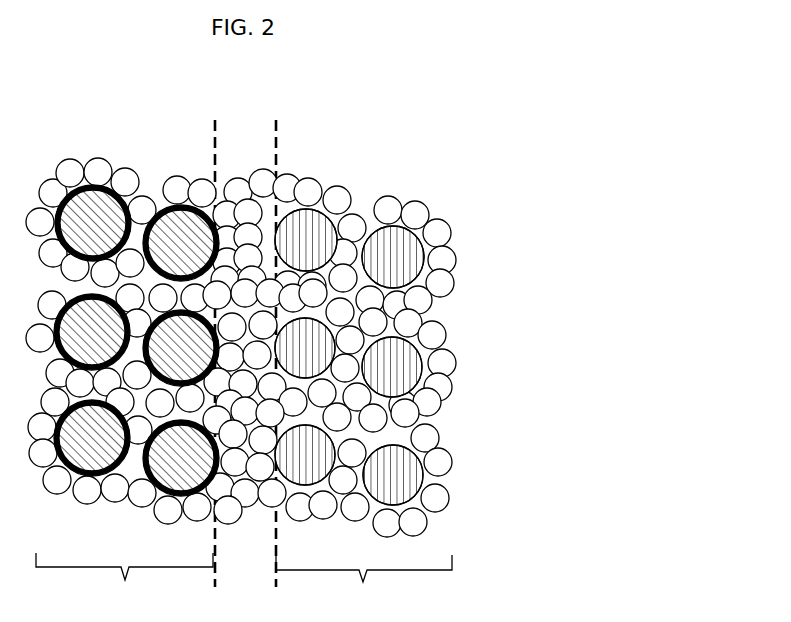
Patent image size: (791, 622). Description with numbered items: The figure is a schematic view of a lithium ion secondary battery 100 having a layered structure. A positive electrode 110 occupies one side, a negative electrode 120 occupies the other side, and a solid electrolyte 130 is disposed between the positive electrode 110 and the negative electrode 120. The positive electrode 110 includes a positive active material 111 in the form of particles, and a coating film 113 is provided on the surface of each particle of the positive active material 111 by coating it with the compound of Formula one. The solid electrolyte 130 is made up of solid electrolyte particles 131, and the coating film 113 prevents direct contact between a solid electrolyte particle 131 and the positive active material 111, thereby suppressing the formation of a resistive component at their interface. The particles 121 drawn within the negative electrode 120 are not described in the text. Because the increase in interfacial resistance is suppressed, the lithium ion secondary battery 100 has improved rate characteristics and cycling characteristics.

The lithium ion secondary battery 100 is at (371, 153).
The positive electrode 110 is at (124, 578).
The positive active material 111 is at (158, 214).
The coating film 113 is at (68, 194).
The negative electrode 120 is at (364, 579).
The second active material particle 121 is at (374, 510).
The solid electrolyte 130 is at (215, 150).
The solid electrolyte particle 131 is at (392, 197).